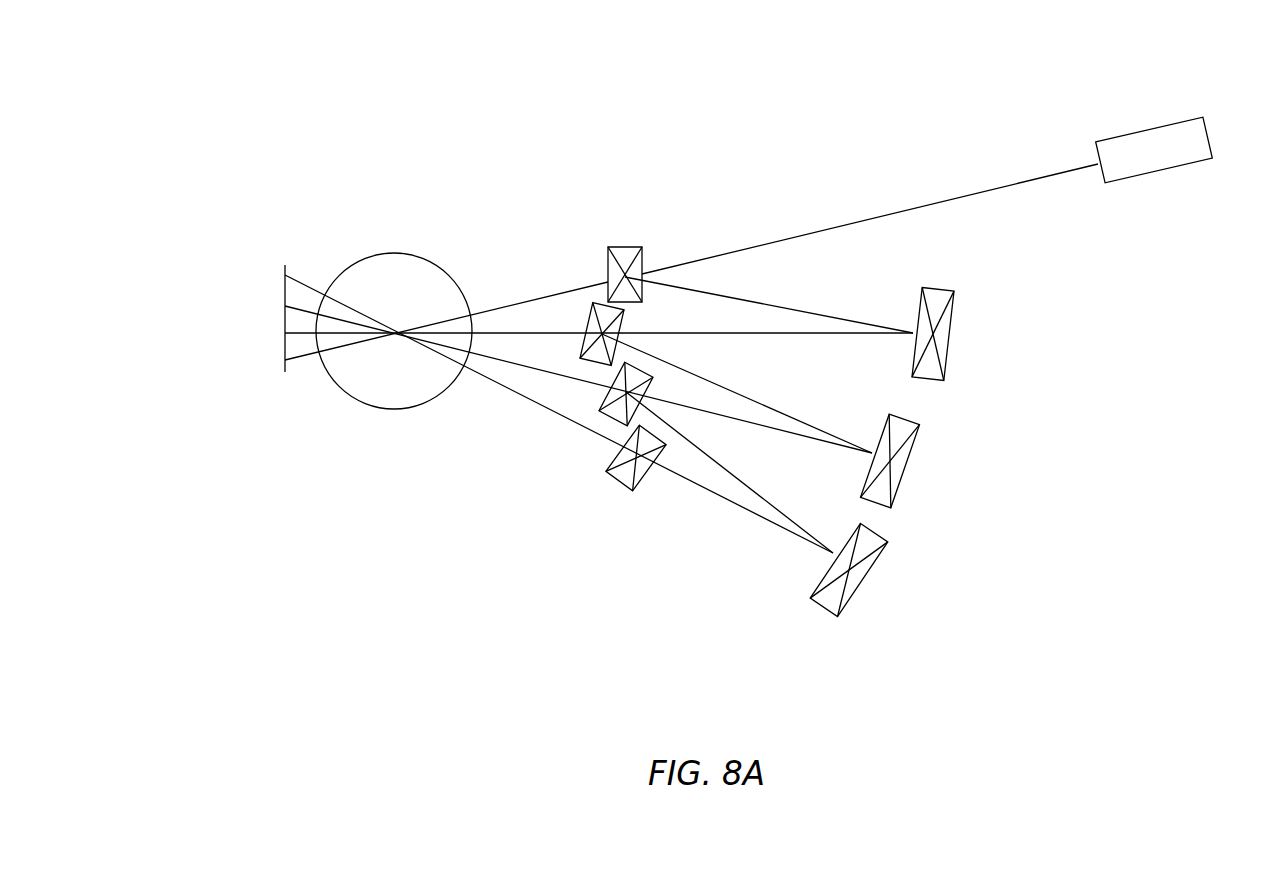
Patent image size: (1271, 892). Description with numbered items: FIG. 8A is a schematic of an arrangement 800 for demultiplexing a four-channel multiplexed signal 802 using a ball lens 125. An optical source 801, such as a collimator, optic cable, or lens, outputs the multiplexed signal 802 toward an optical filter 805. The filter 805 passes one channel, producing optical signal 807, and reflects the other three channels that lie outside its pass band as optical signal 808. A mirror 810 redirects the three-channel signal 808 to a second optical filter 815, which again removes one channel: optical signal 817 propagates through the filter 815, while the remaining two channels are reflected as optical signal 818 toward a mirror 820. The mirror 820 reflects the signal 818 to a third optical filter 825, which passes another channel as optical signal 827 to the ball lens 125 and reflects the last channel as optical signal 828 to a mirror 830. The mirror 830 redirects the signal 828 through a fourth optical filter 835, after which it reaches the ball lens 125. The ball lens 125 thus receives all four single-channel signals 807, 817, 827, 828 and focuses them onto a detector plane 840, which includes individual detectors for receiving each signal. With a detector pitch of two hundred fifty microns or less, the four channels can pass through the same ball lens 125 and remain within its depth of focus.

The ball lens 125 is at (395, 253).
The eye tracking optical system 800 is at (1172, 99).
The optical source 801 is at (1163, 172).
The multiplexed signal 802 is at (885, 209).
The optical filter 805 is at (618, 246).
The optical signal 807 is at (508, 298).
The optical signal 808 is at (800, 308).
The mirror 810 is at (951, 333).
The optical filter 815 is at (630, 331).
The optical signal 817 is at (510, 331).
The optical signal 818 is at (760, 403).
The mirror 820 is at (906, 462).
The optical filter 825 is at (597, 402).
The optical signal 827 is at (510, 360).
The optical signal 828 is at (752, 489).
The mirror 830 is at (867, 575).
The optical filter 835 is at (610, 478).
The detector plane 840 is at (266, 317).